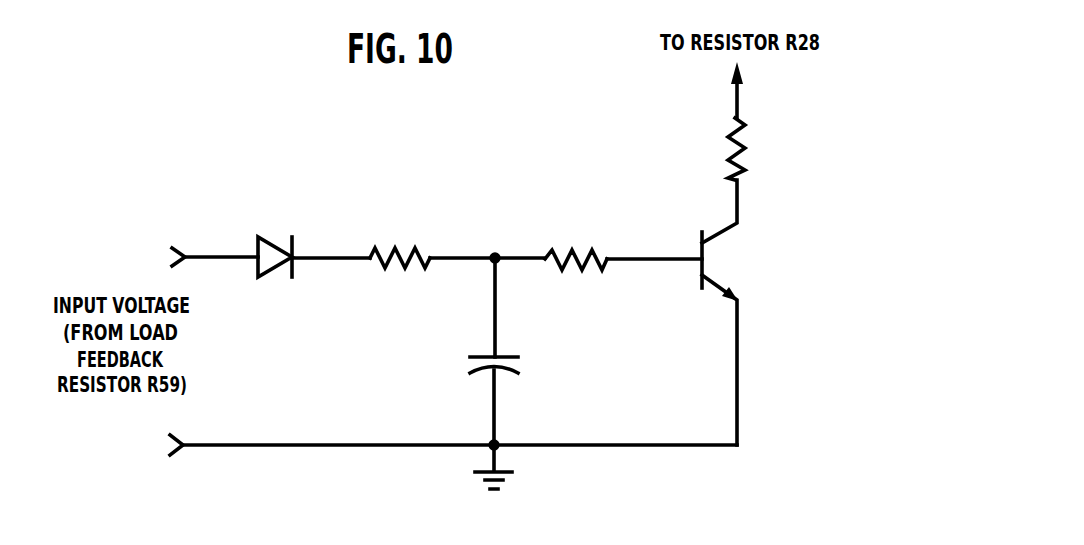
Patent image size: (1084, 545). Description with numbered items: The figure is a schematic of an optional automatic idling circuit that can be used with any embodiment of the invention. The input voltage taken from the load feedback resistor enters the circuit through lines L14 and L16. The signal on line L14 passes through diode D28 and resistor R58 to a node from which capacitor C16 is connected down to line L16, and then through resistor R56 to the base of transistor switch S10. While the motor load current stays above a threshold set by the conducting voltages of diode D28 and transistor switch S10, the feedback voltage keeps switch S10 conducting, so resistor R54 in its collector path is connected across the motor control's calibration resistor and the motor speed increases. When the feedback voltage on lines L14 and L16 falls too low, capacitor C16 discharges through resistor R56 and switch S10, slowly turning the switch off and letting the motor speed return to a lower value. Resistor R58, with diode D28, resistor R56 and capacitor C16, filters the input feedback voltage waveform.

The line L14 is at (217, 257).
The diode D28 is at (258, 237).
The resistor R58 is at (397, 247).
The resistor R56 is at (570, 247).
The capacitor C16 is at (527, 365).
The transistor switch S10 is at (706, 259).
The resistor R54 is at (745, 148).
The line L16 is at (232, 445).